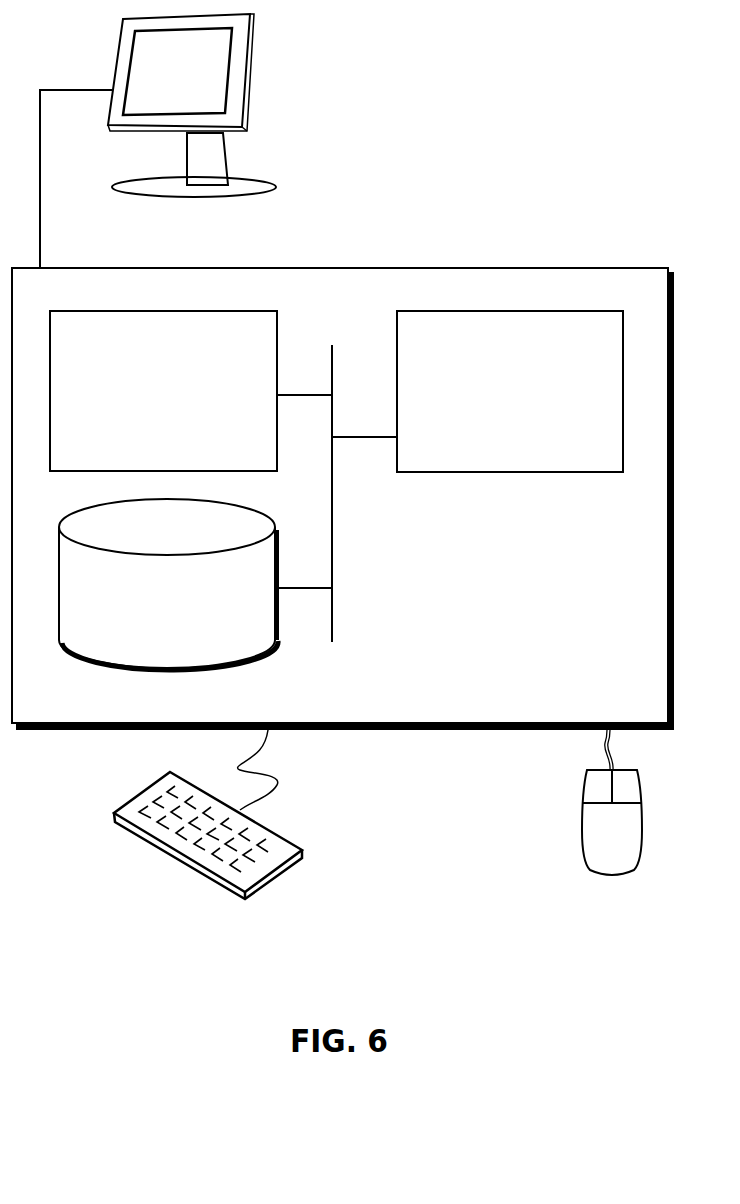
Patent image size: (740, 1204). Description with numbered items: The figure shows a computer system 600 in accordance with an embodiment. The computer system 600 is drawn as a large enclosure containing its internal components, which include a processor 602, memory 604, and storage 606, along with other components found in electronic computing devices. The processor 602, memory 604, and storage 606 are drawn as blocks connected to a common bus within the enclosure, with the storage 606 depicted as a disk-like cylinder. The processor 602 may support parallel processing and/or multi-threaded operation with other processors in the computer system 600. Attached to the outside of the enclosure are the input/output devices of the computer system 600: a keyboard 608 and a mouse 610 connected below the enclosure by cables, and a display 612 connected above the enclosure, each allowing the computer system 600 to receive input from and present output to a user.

The computer system 600 is at (387, 247).
The processor 602 is at (510, 391).
The memory 604 is at (163, 391).
The storage 606 is at (168, 584).
The keyboard 608 is at (133, 835).
The mouse 610 is at (612, 802).
The display 612 is at (158, 141).